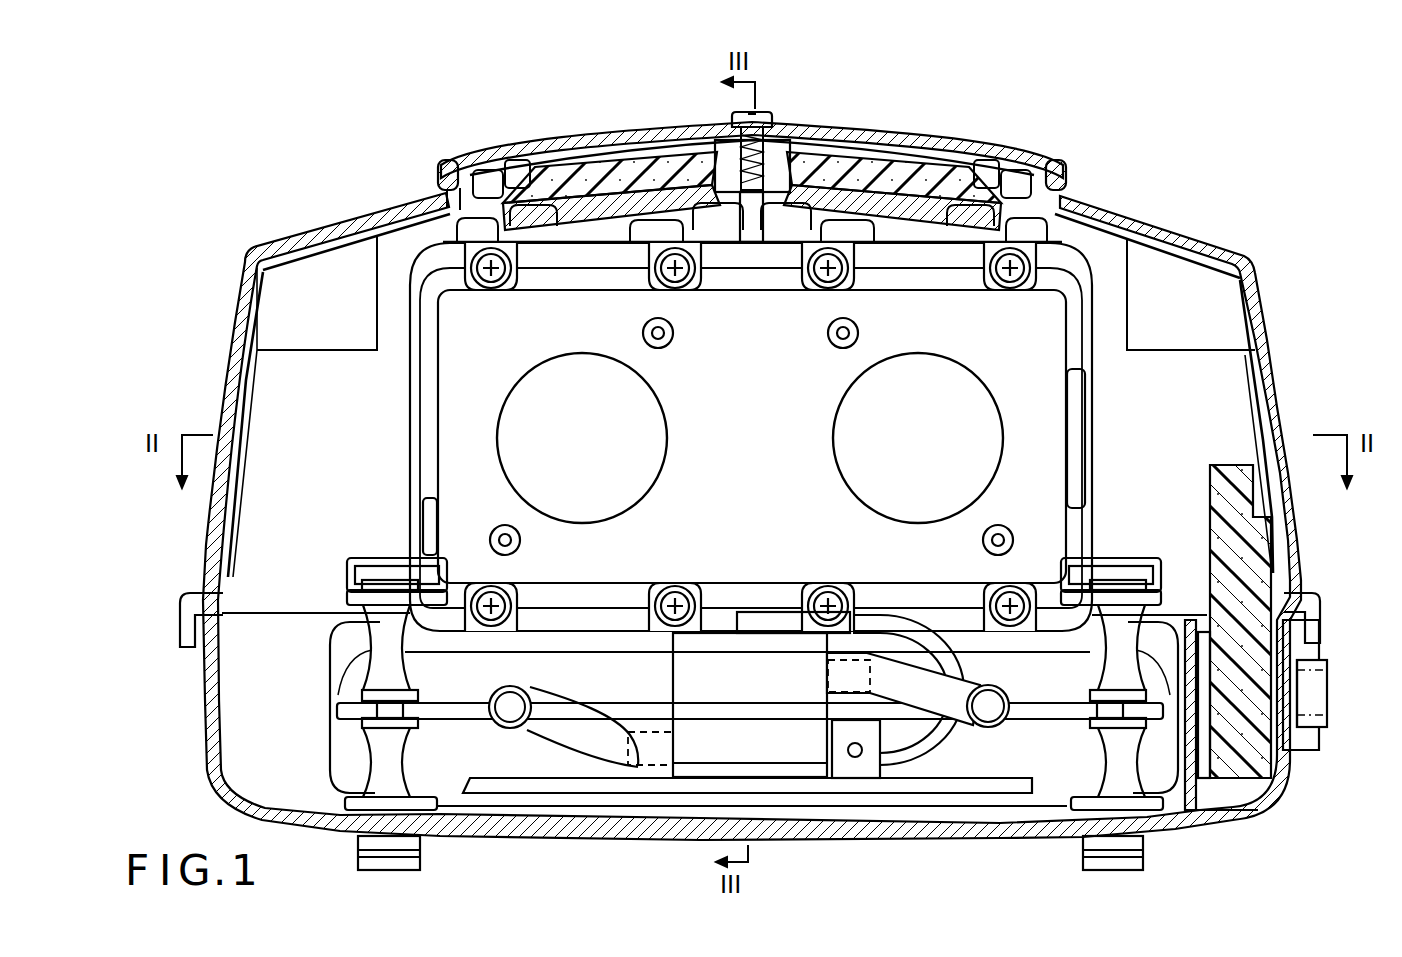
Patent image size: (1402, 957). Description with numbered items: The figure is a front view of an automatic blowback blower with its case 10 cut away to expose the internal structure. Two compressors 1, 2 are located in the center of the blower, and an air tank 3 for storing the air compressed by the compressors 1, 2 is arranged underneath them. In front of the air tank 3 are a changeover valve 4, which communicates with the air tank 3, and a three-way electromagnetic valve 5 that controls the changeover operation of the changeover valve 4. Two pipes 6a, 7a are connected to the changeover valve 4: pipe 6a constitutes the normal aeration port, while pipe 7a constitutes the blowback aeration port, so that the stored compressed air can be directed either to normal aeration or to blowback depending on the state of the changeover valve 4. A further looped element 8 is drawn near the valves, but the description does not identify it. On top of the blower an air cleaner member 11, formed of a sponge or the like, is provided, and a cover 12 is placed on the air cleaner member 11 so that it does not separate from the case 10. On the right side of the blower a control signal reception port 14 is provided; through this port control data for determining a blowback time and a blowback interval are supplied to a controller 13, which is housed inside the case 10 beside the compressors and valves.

The compressor 1 is at (540, 365).
The compressor 2 is at (968, 372).
The air tank 3 is at (1155, 770).
The changeover valve 4 is at (697, 752).
The three-way electromagnetic valve 5 is at (860, 765).
The pipe 6a is at (947, 703).
The pipe 7a is at (596, 723).
The tube 8 is at (920, 745).
The case 10 is at (1262, 306).
The air cleaner member 11 is at (834, 146).
The cover 12 is at (949, 147).
The controller 13 is at (1250, 773).
The control signal reception port 14 is at (1311, 730).